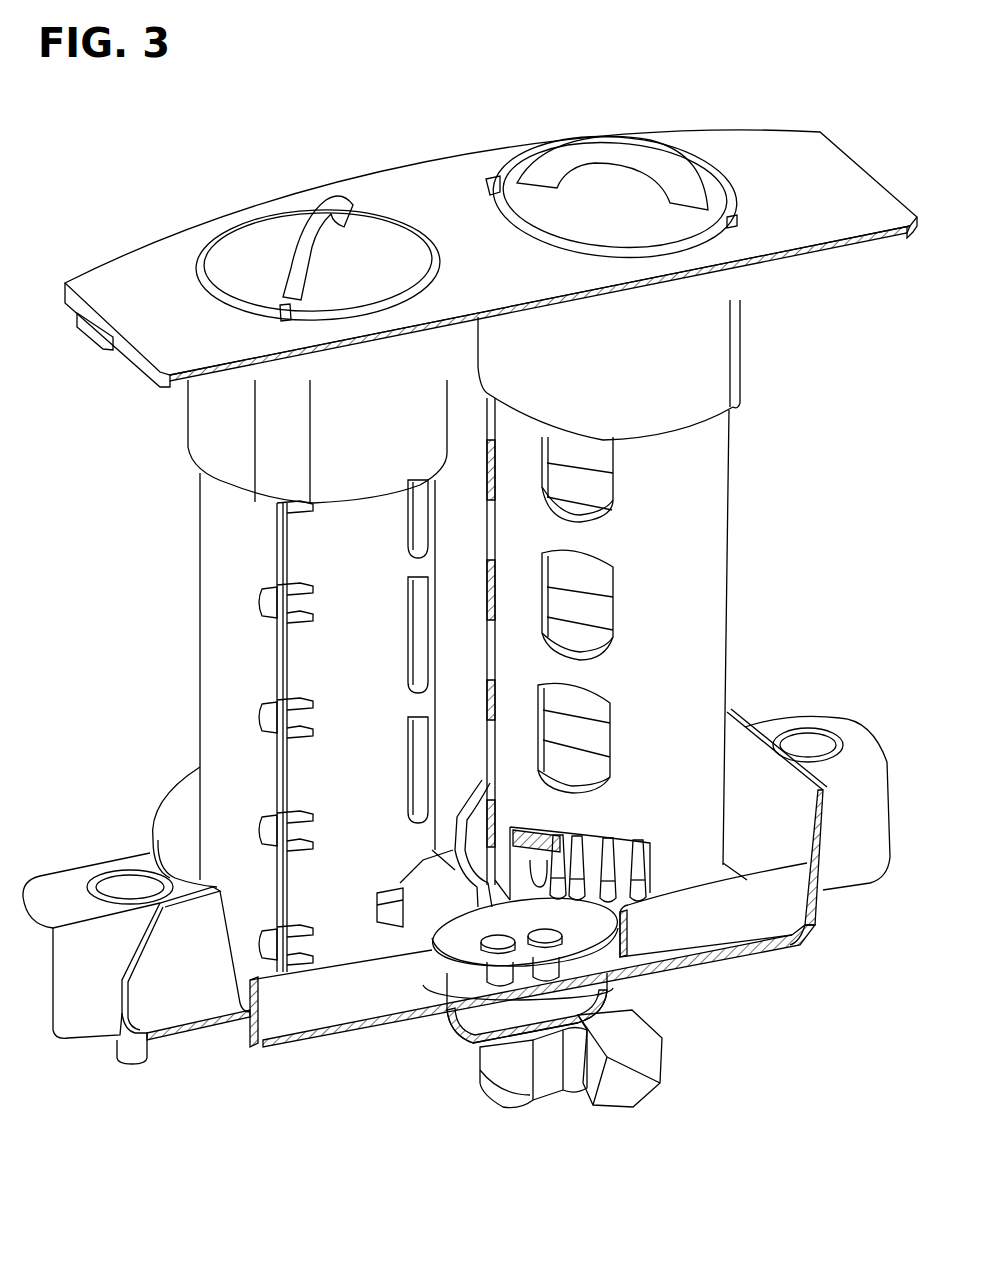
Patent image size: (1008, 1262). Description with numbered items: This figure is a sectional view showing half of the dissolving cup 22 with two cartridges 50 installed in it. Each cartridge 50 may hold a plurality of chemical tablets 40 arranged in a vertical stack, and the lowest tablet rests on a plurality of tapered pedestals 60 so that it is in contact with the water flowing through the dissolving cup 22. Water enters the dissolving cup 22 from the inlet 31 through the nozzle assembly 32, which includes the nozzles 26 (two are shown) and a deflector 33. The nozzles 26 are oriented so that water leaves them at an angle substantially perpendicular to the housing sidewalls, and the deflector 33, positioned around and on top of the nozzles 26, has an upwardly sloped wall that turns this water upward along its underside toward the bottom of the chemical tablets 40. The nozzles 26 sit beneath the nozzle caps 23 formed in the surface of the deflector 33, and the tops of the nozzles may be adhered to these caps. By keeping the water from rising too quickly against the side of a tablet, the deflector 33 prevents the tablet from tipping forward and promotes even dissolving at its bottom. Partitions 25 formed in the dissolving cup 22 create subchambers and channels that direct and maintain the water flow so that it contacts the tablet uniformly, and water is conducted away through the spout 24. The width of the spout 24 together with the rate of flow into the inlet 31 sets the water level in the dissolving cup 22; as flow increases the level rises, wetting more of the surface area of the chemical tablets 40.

The dissolving cup 22 is at (733, 713).
The nozzle caps 23 is at (553, 932).
The spout 24 is at (192, 967).
The partitions 25 is at (462, 812).
The nozzles 26 is at (547, 970).
The inlet 31 is at (668, 1061).
The nozzle assembly 32 is at (432, 1029).
The deflector 33 is at (592, 922).
The chemical tablets 40 is at (592, 570).
The cartridges 50 is at (737, 463).
The tapered pedestals 60 is at (650, 867).